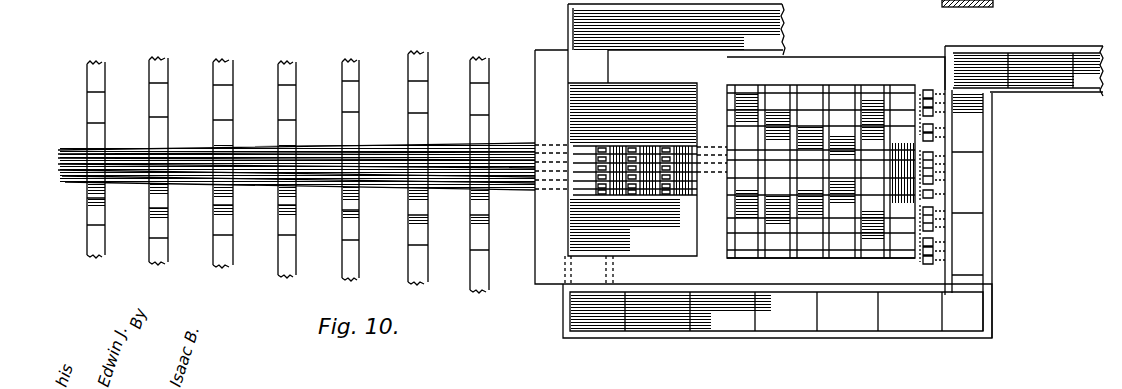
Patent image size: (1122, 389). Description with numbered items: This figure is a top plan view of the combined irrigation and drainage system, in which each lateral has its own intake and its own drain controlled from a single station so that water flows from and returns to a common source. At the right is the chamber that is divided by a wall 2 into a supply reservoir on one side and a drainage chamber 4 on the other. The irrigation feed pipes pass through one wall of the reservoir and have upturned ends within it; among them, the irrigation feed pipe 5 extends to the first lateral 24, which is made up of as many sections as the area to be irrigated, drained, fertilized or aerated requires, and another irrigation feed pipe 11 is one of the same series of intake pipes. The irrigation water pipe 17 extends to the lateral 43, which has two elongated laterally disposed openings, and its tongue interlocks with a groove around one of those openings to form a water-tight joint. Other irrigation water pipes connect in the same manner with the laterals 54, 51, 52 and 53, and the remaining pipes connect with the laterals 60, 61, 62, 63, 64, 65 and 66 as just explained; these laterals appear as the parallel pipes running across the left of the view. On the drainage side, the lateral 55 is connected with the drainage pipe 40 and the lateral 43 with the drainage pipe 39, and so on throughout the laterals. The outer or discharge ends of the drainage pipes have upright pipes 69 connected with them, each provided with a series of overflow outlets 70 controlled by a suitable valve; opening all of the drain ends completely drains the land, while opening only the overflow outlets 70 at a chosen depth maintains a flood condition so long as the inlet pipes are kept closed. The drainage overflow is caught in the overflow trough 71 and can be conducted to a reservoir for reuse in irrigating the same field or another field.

The wall 2 is at (712, 105).
The drainage chamber 4 is at (836, 88).
The irrigation feed pipe 5 is at (603, 210).
The irrigation feed pipe 11 is at (632, 195).
The irrigation water pipe 17 is at (668, 195).
The first lateral 24 is at (484, 280).
The drainage pipe 39 is at (770, 255).
The drainage pipe 40 is at (907, 8).
The lateral 43 is at (352, 270).
The lateral 51 is at (288, 266).
The lateral 52 is at (226, 260).
The lateral 53 is at (156, 258).
The lateral 54 is at (96, 250).
The lateral 55 is at (418, 275).
The lateral 60 is at (96, 64).
The lateral 61 is at (158, 60).
The lateral 62 is at (224, 62).
The lateral 63 is at (288, 64).
The lateral 64 is at (351, 62).
The lateral 65 is at (416, 54).
The lateral 66 is at (481, 58).
The upright pipe 69 is at (948, 197).
The overflow outlet 70 is at (948, 170).
The overflow trough 71 is at (965, 244).